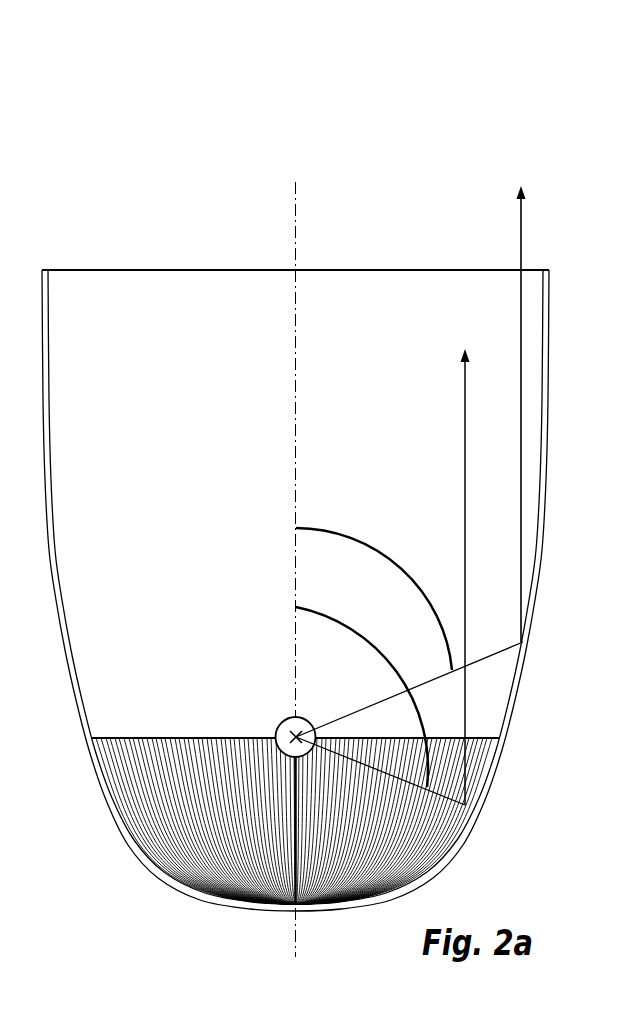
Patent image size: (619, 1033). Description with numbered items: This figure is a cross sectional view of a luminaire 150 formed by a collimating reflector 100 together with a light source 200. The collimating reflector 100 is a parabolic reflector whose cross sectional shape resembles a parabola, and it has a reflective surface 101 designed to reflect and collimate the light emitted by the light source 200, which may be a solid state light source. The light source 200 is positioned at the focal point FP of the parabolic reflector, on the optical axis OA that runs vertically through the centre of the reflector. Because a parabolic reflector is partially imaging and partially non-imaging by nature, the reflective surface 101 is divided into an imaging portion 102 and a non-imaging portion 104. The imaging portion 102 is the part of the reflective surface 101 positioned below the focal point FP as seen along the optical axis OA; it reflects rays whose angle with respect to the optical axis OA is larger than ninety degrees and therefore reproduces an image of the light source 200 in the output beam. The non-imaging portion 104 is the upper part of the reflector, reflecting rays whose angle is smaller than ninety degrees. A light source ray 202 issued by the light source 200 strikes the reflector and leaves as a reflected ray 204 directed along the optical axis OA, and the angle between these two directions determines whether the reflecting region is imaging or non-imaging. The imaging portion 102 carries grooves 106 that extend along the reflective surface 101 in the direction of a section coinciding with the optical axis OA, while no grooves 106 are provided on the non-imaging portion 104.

The collimating reflector 100 is at (476, 182).
The reflective surface 101 is at (128, 275).
The imaging portion 102 is at (182, 835).
The non-imaging portion 104 is at (190, 300).
The grooves 106 is at (204, 746).
The luminaire 150 is at (392, 105).
The light source 200 is at (293, 717).
The light source ray 202 is at (475, 662).
The reflected ray 204 is at (520, 283).
The optical axis OA is at (293, 557).
The focal point FP is at (299, 735).